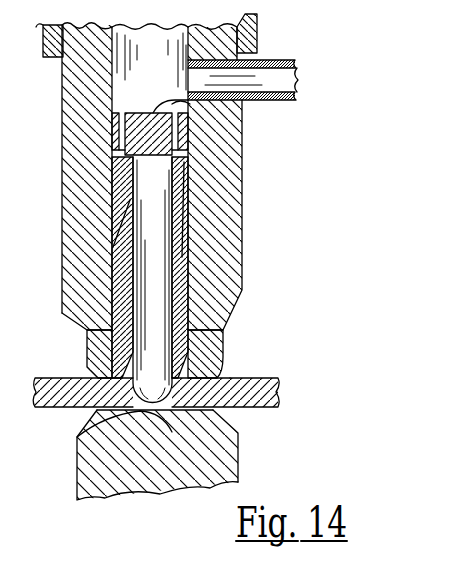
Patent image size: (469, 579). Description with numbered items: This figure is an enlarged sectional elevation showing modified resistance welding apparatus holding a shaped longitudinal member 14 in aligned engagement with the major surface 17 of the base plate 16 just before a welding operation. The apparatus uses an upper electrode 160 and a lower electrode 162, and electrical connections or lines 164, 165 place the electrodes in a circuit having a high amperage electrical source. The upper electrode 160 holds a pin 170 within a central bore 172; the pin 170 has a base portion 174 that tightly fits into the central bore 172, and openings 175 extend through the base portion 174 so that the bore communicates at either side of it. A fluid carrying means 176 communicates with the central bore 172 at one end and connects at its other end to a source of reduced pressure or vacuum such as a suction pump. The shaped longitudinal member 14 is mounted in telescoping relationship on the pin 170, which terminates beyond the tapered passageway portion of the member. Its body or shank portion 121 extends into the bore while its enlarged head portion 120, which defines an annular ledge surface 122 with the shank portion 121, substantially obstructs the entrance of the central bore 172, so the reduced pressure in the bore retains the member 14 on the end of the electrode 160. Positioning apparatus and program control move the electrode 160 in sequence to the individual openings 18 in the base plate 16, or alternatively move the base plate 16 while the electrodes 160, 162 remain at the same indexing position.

The shaped longitudinal member 14 is at (191, 176).
The base plate 16 is at (283, 392).
The major surface 17 is at (260, 378).
The openings 18 is at (77, 437).
The head portion 120 is at (223, 345).
The body or shank portion 121 is at (177, 292).
The annular ledge surface 122 is at (212, 325).
The upper electrode 160 is at (243, 190).
The lower electrode 162 is at (77, 480).
The electrical connection or line 164 is at (255, 30).
The electrical connection or line 165 is at (238, 462).
The pin 170 is at (152, 250).
The central bore 172 is at (172, 155).
The base portion 174 is at (178, 102).
The openings 175 is at (195, 103).
The fluid carrying means 176 is at (293, 72).